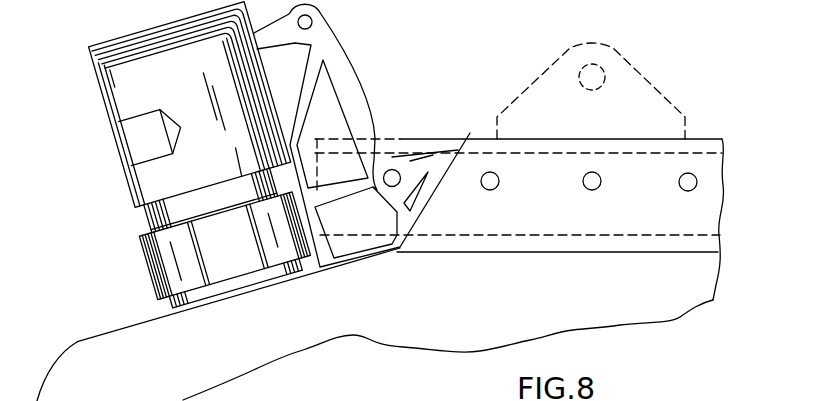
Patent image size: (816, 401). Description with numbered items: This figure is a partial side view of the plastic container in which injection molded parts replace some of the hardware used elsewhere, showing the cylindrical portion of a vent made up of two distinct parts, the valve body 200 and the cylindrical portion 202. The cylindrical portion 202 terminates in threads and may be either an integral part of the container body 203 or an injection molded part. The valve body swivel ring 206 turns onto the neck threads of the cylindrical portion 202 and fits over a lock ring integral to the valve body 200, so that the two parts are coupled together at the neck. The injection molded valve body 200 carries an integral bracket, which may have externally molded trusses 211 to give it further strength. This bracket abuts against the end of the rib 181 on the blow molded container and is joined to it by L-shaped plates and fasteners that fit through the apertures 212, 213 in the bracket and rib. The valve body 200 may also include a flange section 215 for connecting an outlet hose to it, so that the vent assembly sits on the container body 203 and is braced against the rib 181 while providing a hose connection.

The valve body 200 is at (194, 118).
The cylindrical portion 202 is at (238, 295).
The body 203 is at (444, 326).
The valve body swivel ring 206 is at (226, 251).
The externally molded trusses 211 is at (349, 172).
The aperture 212 is at (394, 170).
The aperture 213 is at (493, 187).
The rib 181 is at (470, 133).
The flange section 215 is at (121, 133).